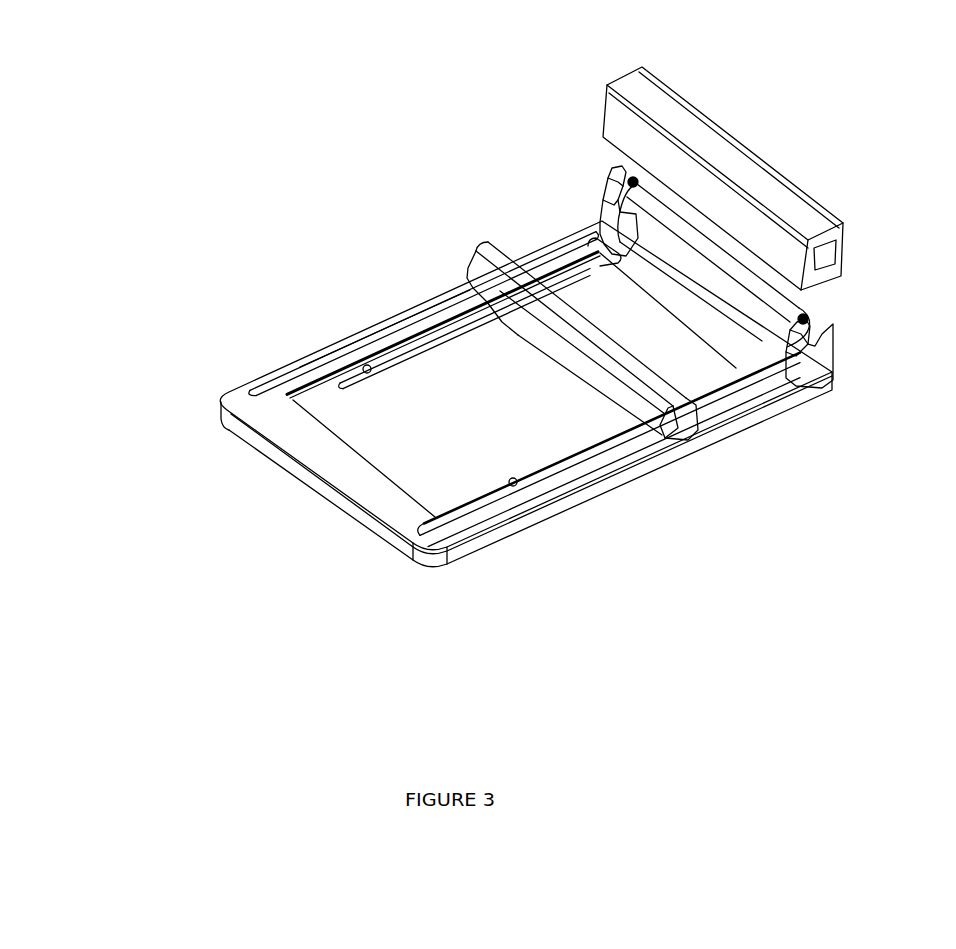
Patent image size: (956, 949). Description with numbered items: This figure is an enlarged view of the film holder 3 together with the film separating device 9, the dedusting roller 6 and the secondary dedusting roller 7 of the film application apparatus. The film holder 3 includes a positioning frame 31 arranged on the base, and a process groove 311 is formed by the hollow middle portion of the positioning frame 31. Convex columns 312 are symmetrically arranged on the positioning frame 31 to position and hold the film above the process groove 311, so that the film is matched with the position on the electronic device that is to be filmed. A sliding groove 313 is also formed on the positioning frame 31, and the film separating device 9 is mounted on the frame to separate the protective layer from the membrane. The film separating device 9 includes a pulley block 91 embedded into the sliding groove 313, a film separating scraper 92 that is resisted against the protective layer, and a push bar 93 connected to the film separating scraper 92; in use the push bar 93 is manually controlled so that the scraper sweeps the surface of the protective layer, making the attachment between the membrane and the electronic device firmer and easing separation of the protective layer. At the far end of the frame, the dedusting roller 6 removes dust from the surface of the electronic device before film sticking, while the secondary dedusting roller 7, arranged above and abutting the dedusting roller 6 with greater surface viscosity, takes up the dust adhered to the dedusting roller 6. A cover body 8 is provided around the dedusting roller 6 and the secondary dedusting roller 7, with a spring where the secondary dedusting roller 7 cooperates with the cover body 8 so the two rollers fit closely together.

The film holder 3 is at (220, 348).
The positioning frame 31 is at (393, 513).
The process groove 311 is at (530, 423).
The convex columns 312 is at (367, 373).
The sliding groove 313 is at (395, 326).
The film separating device 9 is at (492, 164).
The pulley block 91 is at (465, 288).
The film separating scraper 92 is at (513, 327).
The push bar 93 is at (570, 315).
The dedusting roller 6 is at (760, 343).
The secondary dedusting roller 7 is at (772, 308).
The cover body 8 is at (713, 157).